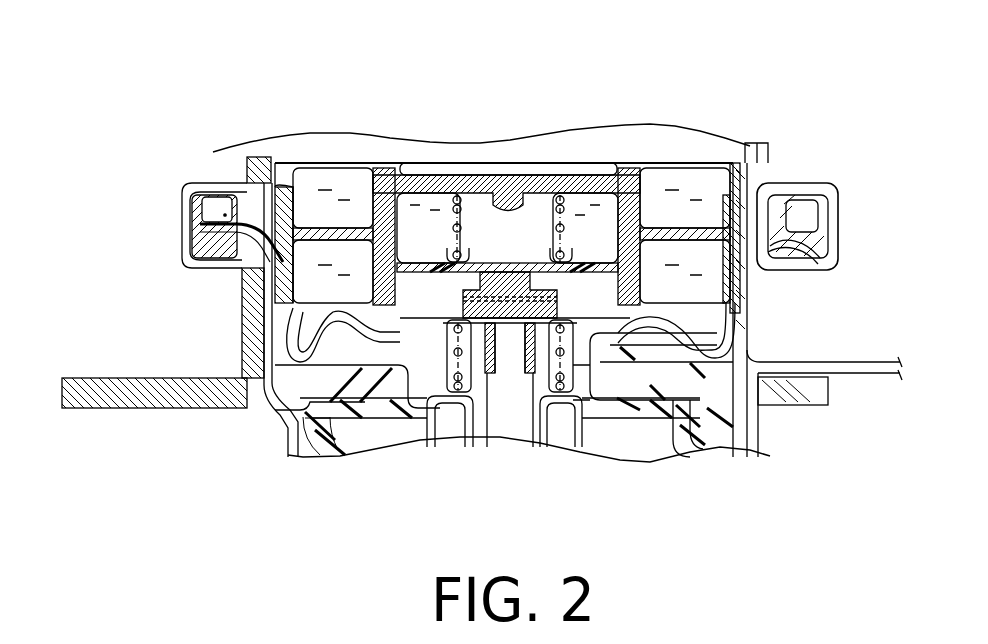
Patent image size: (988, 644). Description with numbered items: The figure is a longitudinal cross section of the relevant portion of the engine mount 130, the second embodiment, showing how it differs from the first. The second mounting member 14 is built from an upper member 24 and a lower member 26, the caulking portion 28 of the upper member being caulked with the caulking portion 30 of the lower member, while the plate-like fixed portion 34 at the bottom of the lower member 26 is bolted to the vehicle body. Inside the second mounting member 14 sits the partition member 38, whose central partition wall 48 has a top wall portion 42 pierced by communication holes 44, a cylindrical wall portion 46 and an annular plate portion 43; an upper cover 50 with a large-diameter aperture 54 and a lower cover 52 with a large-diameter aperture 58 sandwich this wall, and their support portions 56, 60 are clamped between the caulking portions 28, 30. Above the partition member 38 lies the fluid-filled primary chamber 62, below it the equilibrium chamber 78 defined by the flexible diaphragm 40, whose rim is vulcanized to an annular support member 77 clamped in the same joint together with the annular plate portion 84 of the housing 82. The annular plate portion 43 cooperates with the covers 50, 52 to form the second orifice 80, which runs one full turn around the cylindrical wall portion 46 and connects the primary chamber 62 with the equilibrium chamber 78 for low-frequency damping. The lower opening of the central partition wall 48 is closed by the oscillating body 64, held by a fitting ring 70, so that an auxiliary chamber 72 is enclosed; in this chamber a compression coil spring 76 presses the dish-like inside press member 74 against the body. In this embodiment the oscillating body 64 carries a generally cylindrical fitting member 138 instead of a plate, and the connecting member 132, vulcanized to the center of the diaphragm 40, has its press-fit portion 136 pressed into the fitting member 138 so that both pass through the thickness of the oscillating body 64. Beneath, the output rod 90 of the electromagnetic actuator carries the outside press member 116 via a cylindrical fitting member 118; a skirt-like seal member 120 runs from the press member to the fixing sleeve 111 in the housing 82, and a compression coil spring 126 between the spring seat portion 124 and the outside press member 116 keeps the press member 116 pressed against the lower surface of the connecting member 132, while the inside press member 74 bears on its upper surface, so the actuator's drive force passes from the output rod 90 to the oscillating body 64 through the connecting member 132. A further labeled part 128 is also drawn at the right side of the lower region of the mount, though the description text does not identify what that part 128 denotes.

The second mounting member 14 is at (228, 157).
The upper member 24 is at (760, 150).
The lower member 26 is at (250, 362).
The caulking portion 28 is at (180, 236).
The caulking portion 30 is at (806, 252).
The fixed portion 34 is at (130, 400).
The partition member 38 is at (678, 148).
The flexible diaphragm 40 is at (742, 397).
The top wall portion 42 is at (533, 175).
The annular plate portion 43 is at (330, 210).
The communication holes 44 is at (415, 215).
The cylindrical wall portion 46 is at (672, 215).
The central partition wall 48 is at (482, 158).
The upper cover 50 is at (350, 200).
The lower cover 52 is at (745, 325).
The large-diameter aperture 54 is at (600, 200).
The support portion 56 is at (250, 188).
The large-diameter aperture 58 is at (710, 335).
The support portion 60 is at (780, 212).
The primary chamber 62 is at (302, 160).
The oscillating body 64 is at (577, 200).
The fitting ring 70 is at (633, 262).
The auxiliary chamber 72 is at (712, 163).
The inside press member 74 is at (503, 270).
The compression coil spring 76 is at (452, 170).
The annular support member 77 is at (195, 205).
The equilibrium chamber 78 is at (290, 333).
The second orifice 80 is at (305, 302).
The housing 82 is at (278, 448).
The annular plate portion 84 is at (210, 248).
The output rod 90 is at (524, 432).
The fixing sleeve 111 is at (760, 450).
The outside press member 116 is at (504, 330).
The cylindrical fitting member 118 is at (558, 375).
The seal member 120 is at (383, 405).
The spring seat portion 124 is at (578, 438).
The compression coil spring 126 is at (462, 352).
The mounting flange 128 is at (860, 373).
The engine mount 130 is at (414, 72).
The connecting member 132 is at (521, 330).
The press-fit portion 136 is at (527, 275).
The fitting member 138 is at (452, 268).